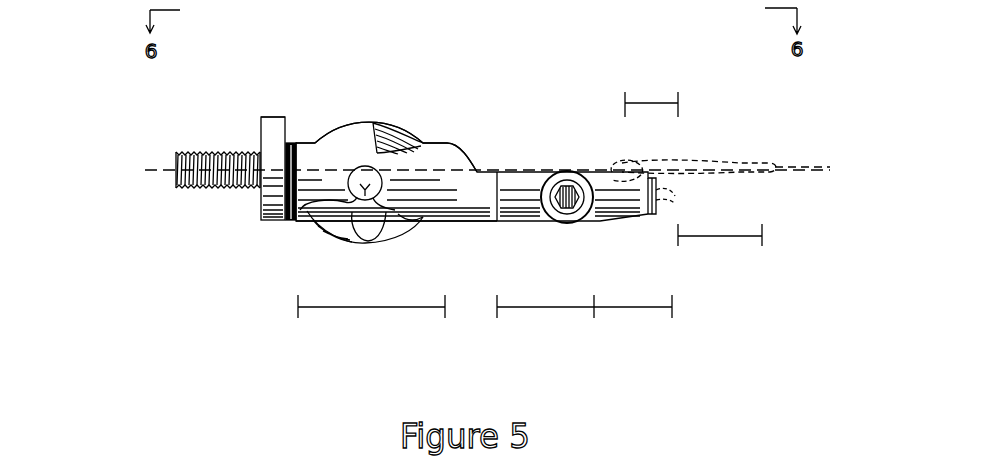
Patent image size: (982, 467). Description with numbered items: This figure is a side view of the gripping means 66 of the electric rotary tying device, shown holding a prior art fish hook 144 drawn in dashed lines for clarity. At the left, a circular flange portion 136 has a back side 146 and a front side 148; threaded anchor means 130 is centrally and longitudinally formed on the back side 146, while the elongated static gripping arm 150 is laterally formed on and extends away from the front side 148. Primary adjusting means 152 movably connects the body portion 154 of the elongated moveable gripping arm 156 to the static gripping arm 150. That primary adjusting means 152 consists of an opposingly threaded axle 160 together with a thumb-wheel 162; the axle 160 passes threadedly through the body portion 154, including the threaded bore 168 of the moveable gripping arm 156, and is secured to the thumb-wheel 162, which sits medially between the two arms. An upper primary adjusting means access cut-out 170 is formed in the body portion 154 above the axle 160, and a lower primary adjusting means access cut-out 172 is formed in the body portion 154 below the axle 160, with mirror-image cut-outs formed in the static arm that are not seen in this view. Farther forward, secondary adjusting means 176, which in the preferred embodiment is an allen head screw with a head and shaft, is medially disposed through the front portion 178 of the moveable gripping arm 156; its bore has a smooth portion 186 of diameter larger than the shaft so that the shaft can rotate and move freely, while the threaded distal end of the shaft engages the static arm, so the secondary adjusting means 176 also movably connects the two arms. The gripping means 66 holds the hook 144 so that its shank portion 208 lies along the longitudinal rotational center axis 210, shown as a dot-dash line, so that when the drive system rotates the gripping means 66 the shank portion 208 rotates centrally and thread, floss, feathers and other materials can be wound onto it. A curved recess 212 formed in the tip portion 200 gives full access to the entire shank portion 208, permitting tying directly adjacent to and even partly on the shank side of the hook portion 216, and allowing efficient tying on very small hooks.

The gripping means 66 is at (93, 86).
The threaded anchor means 130 is at (188, 189).
The circular flange portion 136 is at (278, 117).
The prior art fish hook 144 is at (763, 167).
The back side 146 is at (261, 135).
The front side 148 is at (292, 140).
The elongated static gripping arm 150 is at (297, 143).
The primary adjusting means 152 is at (346, 116).
The body portion 154 is at (412, 308).
The elongated moveable gripping arm 156 is at (430, 142).
The opposingly threaded axle 160 is at (322, 203).
The thumb-wheel 162 is at (411, 222).
The threaded bore 168 is at (363, 240).
The upper primary adjusting means access cut-out 170 is at (380, 133).
The lower primary adjusting means access cut-out 172 is at (374, 213).
The secondary adjusting means 176 is at (562, 226).
The front portion 178 is at (570, 308).
The smooth portion 186 is at (583, 222).
The tip portion 200 is at (650, 308).
The shank portion 208 is at (720, 237).
The longitudinal rotational center axis 210 is at (830, 168).
The curved recess 212 is at (612, 172).
The hook portion 216 is at (656, 103).